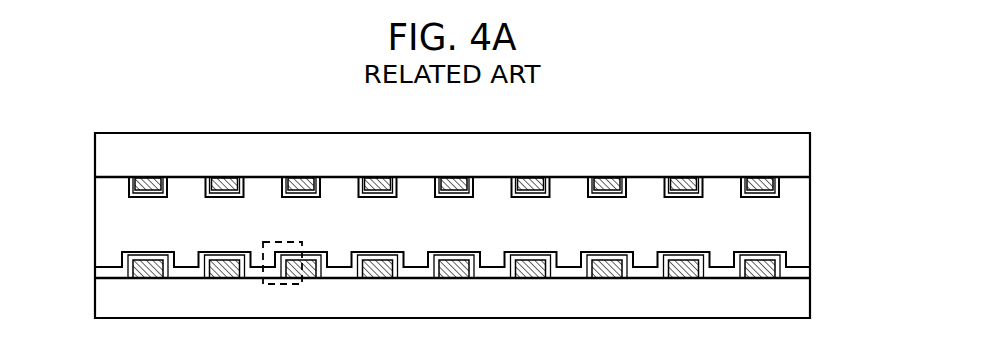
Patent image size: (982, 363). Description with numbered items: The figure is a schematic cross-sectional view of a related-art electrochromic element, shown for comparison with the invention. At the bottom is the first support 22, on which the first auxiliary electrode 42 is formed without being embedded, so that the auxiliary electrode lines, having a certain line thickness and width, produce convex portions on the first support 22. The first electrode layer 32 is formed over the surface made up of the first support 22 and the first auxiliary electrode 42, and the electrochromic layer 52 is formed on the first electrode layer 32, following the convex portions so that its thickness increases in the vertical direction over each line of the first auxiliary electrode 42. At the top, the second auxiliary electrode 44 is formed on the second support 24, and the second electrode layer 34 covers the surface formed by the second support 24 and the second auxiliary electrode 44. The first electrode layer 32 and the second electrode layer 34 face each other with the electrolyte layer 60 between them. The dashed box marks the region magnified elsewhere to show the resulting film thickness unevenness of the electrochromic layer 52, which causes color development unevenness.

The first support 22 is at (800, 310).
The second support 24 is at (800, 148).
The first electrode layer 32 is at (810, 278).
The second electrode layer 34 is at (810, 178).
The first auxiliary electrode 42 is at (758, 272).
The second auxiliary electrode 44 is at (758, 178).
The electrochromic layer 52 is at (810, 273).
The electrolyte layer 60 is at (107, 224).